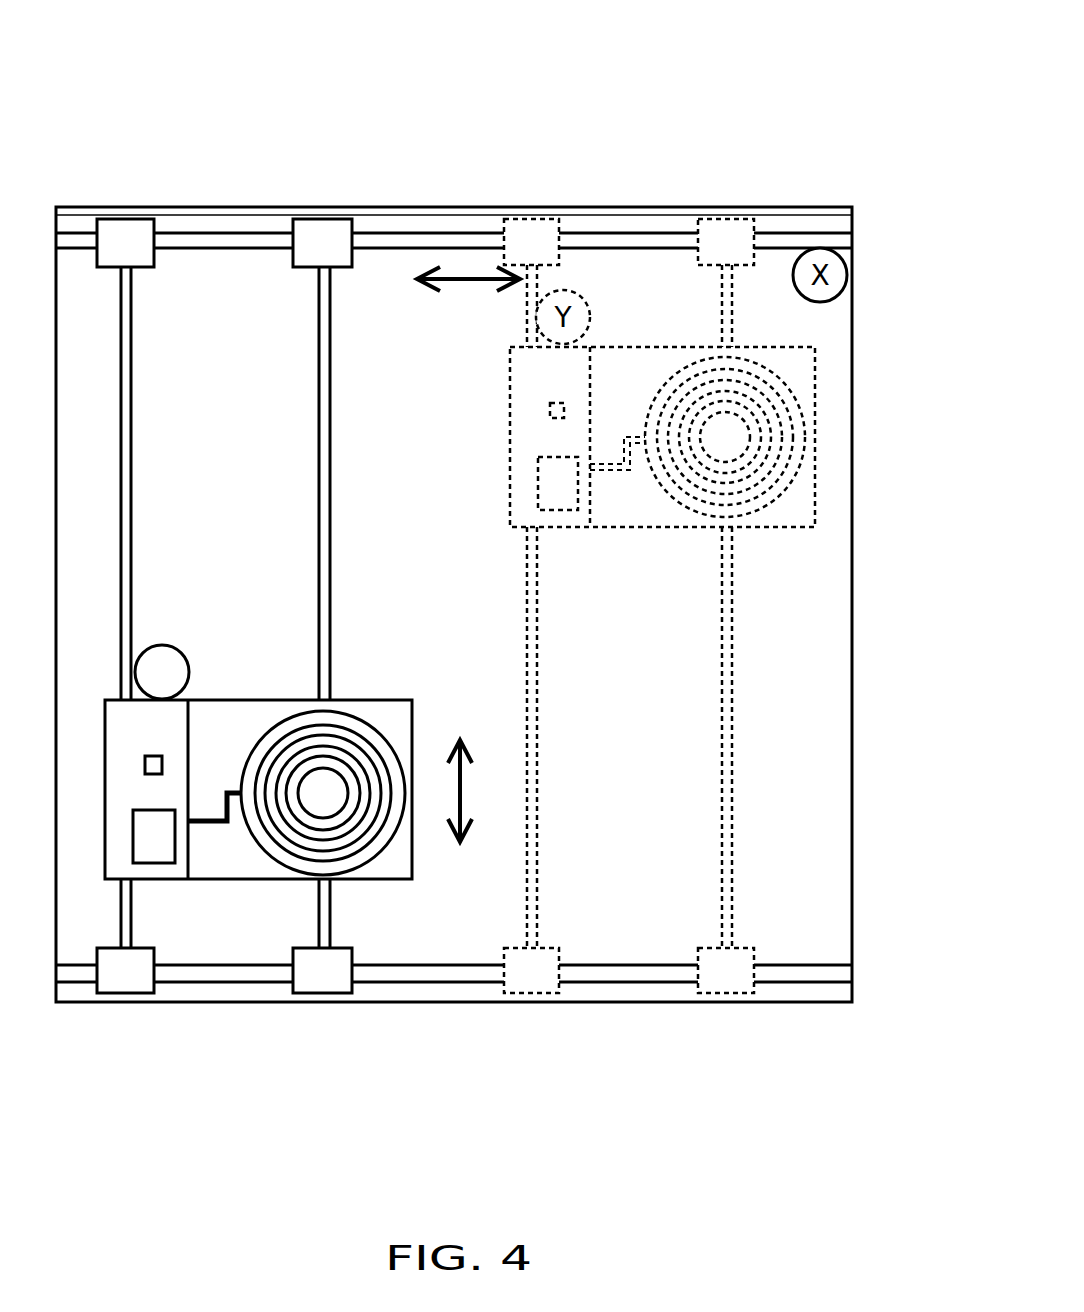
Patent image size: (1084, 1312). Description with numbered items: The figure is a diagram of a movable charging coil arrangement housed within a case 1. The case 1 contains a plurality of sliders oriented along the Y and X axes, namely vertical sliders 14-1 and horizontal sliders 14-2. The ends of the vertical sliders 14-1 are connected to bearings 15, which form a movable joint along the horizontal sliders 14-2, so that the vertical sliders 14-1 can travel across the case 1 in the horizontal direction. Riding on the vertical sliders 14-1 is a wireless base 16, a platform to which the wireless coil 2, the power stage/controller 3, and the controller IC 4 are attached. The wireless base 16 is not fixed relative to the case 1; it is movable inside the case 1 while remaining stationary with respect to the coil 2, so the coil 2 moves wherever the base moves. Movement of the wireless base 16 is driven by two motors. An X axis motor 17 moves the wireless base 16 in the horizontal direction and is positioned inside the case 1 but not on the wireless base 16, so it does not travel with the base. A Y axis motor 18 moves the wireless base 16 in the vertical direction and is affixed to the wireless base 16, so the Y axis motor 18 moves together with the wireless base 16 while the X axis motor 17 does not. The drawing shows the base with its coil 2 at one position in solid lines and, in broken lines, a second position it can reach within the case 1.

The case 1 is at (508, 212).
The movable charging coil 2 is at (375, 860).
The power stage/controller 3 is at (175, 863).
The controller IC 4 is at (148, 775).
The vertical sliders 14-1 is at (332, 460).
The horizontal sliders 14-2 is at (657, 227).
The bearings 15 is at (345, 212).
The wireless base 16 is at (415, 743).
The X axis motor 17 is at (851, 225).
The Y axis motor 18 is at (187, 652).